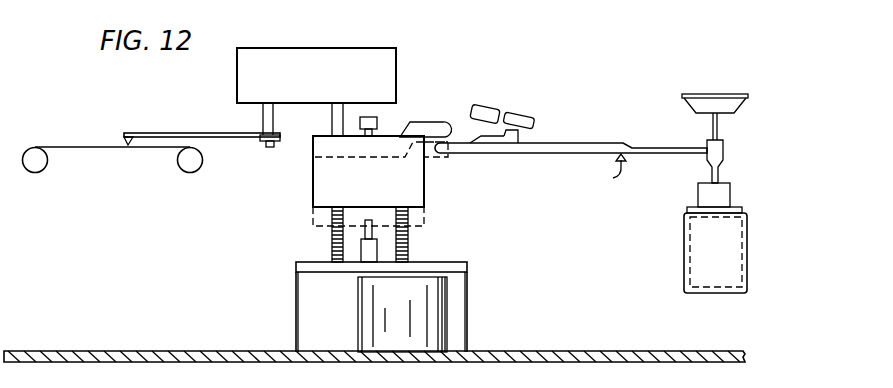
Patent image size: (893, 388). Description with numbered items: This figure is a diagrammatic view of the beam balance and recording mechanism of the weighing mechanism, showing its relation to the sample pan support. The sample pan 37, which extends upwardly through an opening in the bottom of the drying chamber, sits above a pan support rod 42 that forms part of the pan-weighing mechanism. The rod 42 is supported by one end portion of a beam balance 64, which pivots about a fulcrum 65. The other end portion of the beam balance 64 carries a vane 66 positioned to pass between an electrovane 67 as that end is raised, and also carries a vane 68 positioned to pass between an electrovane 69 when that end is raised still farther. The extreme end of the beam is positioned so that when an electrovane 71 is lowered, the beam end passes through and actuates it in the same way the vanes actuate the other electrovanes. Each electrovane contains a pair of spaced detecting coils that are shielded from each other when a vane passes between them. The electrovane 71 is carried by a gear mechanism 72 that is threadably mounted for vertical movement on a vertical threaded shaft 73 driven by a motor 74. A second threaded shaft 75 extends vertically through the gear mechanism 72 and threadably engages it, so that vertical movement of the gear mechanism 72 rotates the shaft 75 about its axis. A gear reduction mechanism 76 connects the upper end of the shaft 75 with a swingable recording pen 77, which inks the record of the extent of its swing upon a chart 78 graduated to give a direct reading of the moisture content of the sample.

The sample pan 37 is at (715, 100).
The pan support rod 42 is at (713, 129).
The beam balance 64 is at (558, 144).
The fulcrum 65 is at (607, 173).
The vane 66 is at (521, 136).
The electrovane 67 is at (524, 119).
The vane 68 is at (487, 137).
The electrovane 69 is at (497, 90).
The electrovane 71 is at (443, 122).
The gear mechanism 72 is at (381, 193).
The vertical threaded shaft 73 is at (408, 240).
The motor 74 is at (411, 313).
The second threaded shaft 75 is at (332, 240).
The gear reduction mechanism 76 is at (330, 86).
The recording pen 77 is at (191, 133).
The chart 78 is at (80, 146).